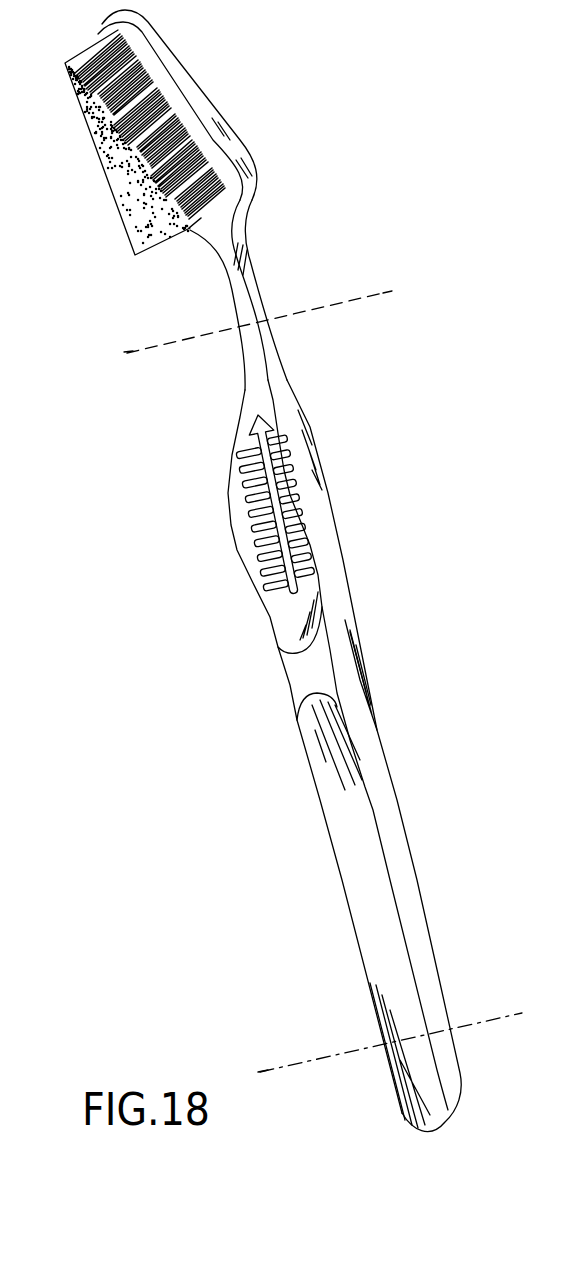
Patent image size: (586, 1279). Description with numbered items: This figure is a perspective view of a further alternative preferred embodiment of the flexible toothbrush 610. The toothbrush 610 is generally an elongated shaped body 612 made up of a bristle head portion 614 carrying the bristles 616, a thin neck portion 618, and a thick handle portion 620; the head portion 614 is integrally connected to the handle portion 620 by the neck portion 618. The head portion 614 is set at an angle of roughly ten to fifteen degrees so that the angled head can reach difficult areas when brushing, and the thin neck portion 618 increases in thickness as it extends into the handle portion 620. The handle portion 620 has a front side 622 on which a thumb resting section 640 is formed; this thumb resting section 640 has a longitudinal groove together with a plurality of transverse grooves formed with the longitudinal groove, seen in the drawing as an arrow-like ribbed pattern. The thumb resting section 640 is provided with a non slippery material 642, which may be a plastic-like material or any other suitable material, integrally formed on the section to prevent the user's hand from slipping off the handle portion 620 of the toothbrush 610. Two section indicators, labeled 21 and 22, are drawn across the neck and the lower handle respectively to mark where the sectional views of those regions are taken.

The flexible toothbrush 610 is at (313, 142).
The elongated shaped body 612 is at (322, 438).
The bristle head portion 614 is at (166, 56).
The bristles 616 is at (83, 113).
The thin neck portion 618 is at (245, 312).
The thick handle portion 620 is at (358, 683).
The front side 622 is at (293, 673).
The thumb resting section 640 is at (287, 513).
The non slippery material 642 is at (287, 513).
The section line 21- 21 is at (387, 285).
The section line 22- 22 is at (521, 1007).